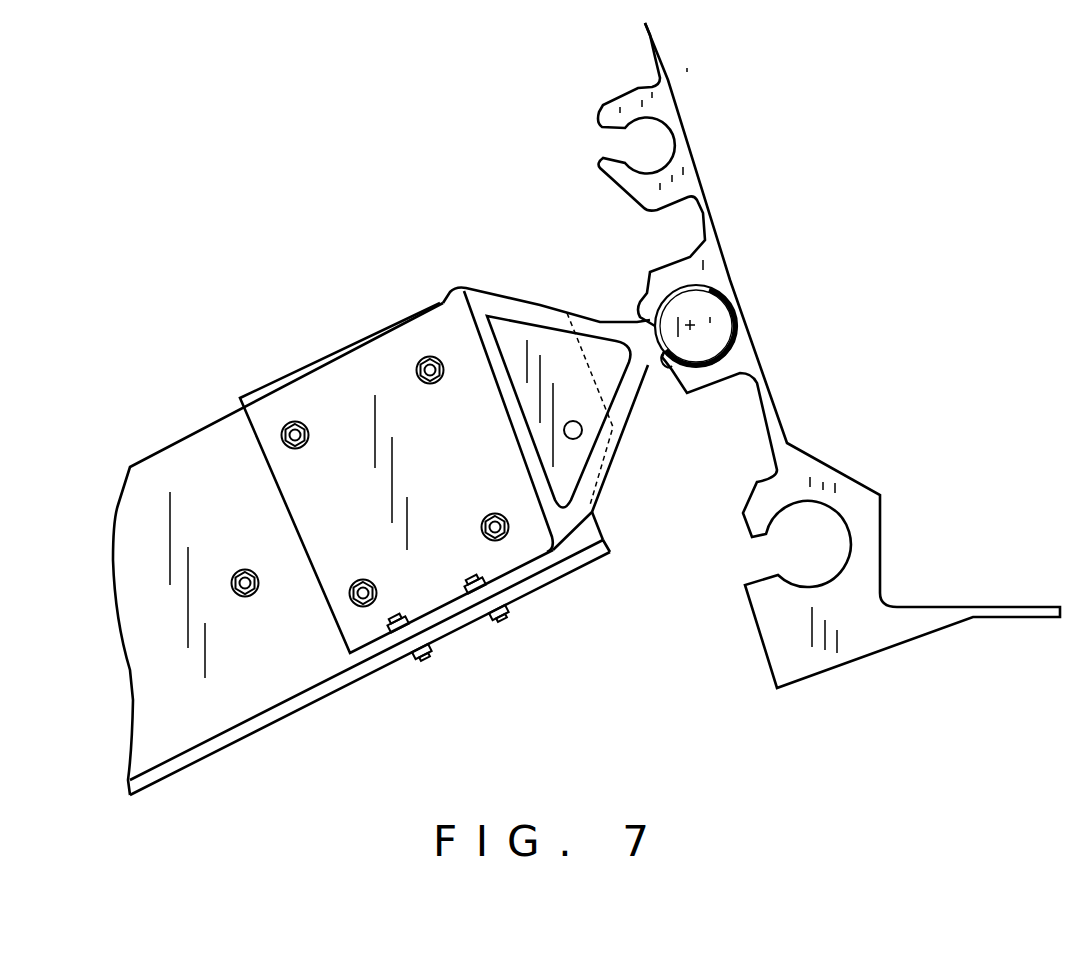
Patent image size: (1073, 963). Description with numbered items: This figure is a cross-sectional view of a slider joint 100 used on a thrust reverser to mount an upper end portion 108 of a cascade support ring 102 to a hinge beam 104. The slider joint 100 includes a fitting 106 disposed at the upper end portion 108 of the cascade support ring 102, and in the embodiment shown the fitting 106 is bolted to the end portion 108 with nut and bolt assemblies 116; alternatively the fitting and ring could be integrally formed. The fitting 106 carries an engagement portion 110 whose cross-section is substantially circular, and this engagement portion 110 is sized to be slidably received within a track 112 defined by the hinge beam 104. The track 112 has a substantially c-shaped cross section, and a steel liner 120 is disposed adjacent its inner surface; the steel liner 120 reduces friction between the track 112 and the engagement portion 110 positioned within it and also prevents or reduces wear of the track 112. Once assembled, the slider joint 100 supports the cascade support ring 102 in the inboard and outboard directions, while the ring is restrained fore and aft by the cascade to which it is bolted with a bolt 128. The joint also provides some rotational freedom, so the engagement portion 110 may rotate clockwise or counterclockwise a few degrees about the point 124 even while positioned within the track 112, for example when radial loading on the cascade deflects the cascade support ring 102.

The slider joint 100 is at (585, 203).
The cascade support ring 102 is at (172, 777).
The hinge beam 104 is at (867, 657).
The fitting 106 is at (577, 314).
The upper end portion 108 is at (307, 703).
The engagement portion 110 is at (707, 316).
The track 112 is at (703, 240).
The nut and bolt assemblies 116 is at (300, 423).
The steel liner 120 is at (728, 356).
The point 124 is at (667, 372).
The bolt 128 is at (231, 576).